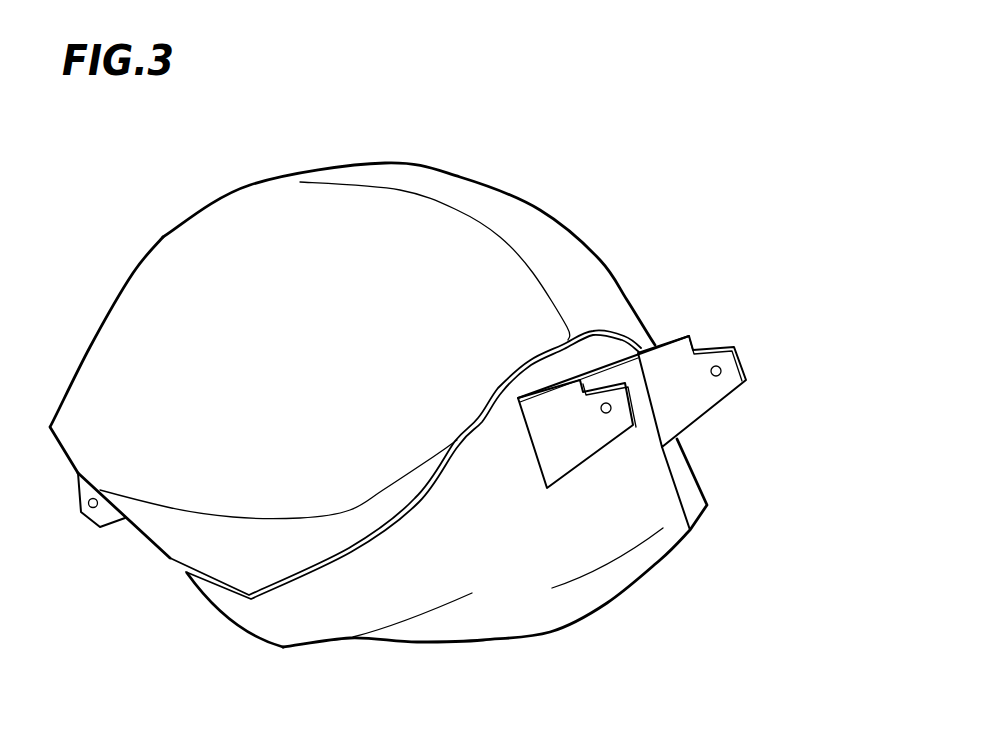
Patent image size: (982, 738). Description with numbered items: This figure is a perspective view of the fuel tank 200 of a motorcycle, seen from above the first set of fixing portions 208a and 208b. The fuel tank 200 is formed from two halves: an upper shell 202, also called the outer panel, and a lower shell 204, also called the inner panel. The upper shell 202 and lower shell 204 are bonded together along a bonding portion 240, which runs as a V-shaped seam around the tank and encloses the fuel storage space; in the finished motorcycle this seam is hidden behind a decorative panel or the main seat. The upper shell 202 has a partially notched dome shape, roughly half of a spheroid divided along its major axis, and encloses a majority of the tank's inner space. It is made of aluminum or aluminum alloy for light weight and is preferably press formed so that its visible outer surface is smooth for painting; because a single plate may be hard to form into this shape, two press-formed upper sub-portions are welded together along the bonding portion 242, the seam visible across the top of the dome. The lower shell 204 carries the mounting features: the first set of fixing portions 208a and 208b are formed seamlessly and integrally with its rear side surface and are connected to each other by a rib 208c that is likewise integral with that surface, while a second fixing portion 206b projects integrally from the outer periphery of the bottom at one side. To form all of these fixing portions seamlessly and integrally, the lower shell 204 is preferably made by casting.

The fuel tank 200 is at (601, 152).
The upper shell 202 is at (138, 292).
The lower shell 204 is at (540, 602).
The second set of fixing portions 206b is at (95, 517).
The first set of fixing portions 208a is at (695, 393).
The first set of fixing portions 208b is at (575, 445).
The rib 208c is at (655, 342).
The bonding portion 240 is at (250, 602).
The bonding portion 242 is at (453, 210).